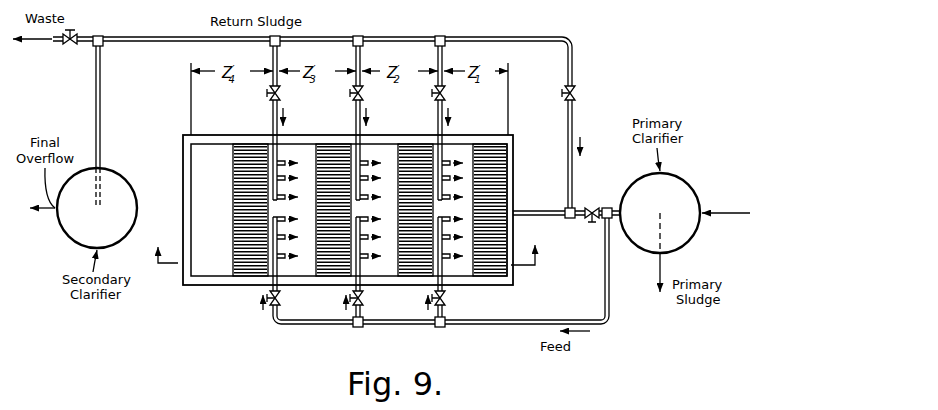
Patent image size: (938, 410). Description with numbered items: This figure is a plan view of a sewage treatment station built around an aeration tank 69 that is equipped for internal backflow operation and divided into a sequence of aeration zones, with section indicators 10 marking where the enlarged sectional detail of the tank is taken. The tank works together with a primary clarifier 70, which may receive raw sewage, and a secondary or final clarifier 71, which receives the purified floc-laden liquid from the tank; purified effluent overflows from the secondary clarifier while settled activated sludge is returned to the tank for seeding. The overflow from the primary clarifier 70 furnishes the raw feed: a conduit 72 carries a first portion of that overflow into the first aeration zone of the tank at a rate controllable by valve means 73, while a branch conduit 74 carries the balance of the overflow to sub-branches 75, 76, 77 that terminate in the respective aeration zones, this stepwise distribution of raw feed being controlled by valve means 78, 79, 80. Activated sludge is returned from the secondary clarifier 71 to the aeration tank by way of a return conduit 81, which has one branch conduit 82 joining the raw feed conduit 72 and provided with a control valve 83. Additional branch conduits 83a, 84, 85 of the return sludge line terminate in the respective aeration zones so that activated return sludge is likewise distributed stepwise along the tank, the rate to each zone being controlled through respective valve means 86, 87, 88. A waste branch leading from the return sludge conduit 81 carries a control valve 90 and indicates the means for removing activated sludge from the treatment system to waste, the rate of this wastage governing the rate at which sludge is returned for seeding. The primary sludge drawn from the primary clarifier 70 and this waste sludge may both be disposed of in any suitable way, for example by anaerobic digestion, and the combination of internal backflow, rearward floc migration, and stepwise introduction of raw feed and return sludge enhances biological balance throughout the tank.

The section line indicator 10 is at (349, 241).
The aeration tank 69 is at (250, 289).
The primary clarifier 70 is at (645, 175).
The secondary or final clarifier 71 is at (118, 173).
The conduit 72 is at (541, 210).
The valve means 73 is at (592, 207).
The branch conduit 74 is at (604, 268).
The sub-branch 75 is at (434, 316).
The sub-branch 76 is at (352, 316).
The sub-branch 77 is at (271, 317).
The valve means 78 is at (446, 301).
The valve means 79 is at (364, 301).
The valve means 80 is at (281, 301).
The return conduit 81 is at (101, 92).
The branch conduit 82 is at (575, 62).
The control valve 83 is at (577, 95).
The branch conduit 83a is at (445, 61).
The branch conduit 84 is at (362, 61).
The branch conduit 85 is at (279, 61).
The valve means 86 is at (446, 95).
The valve means 87 is at (364, 95).
The valve means 88 is at (281, 95).
The control valve 90 is at (70, 46).